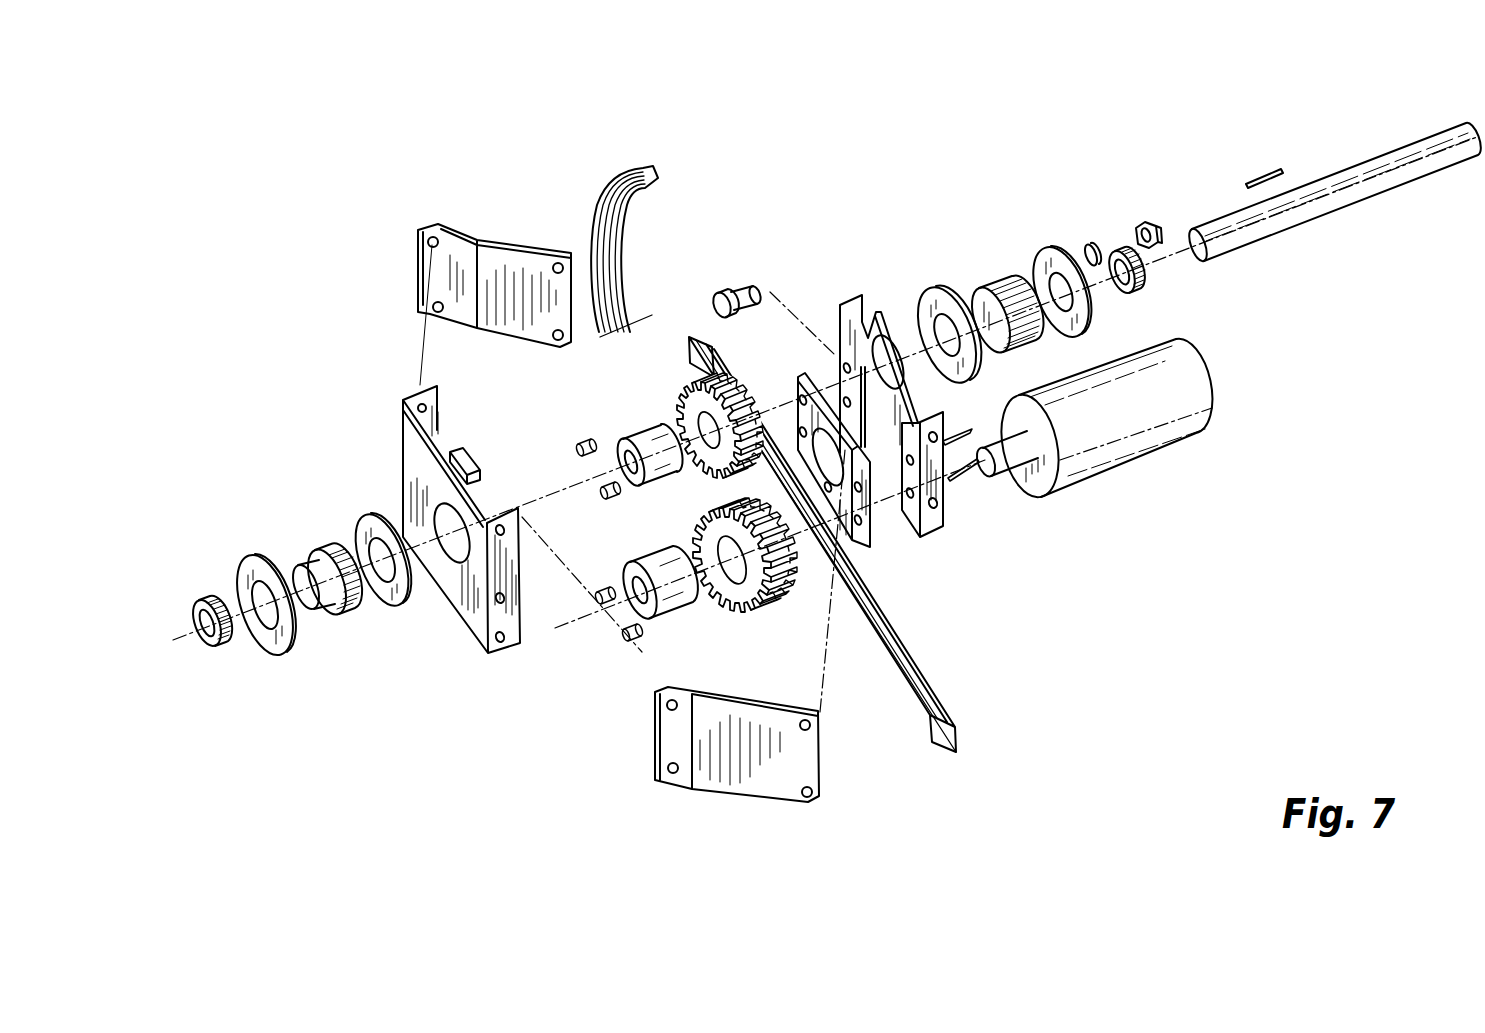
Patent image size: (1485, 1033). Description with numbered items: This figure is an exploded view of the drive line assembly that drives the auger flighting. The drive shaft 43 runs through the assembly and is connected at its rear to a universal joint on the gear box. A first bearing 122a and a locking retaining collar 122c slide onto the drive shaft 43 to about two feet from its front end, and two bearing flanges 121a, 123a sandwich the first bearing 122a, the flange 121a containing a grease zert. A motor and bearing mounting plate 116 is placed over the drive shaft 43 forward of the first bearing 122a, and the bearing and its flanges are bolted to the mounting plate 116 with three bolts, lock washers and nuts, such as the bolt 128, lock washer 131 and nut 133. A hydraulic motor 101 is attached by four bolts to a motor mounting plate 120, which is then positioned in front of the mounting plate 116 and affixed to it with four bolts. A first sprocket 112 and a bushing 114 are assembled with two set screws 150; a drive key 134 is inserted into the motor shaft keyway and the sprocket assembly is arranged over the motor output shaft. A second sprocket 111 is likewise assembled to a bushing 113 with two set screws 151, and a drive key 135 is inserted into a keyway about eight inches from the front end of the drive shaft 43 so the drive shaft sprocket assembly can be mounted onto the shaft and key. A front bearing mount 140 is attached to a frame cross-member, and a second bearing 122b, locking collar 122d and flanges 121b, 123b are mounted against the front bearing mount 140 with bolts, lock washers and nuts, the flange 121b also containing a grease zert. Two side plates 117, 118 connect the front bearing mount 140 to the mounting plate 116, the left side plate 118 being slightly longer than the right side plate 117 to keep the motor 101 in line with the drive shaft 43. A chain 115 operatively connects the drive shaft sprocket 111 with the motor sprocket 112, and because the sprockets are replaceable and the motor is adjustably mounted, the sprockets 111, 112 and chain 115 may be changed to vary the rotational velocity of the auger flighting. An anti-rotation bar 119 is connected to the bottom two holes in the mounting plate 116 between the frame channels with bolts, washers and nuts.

The drive shaft 43 is at (1290, 222).
The hydraulic motor 101 is at (1152, 450).
The second sprocket 111 is at (705, 405).
The first sprocket 112 is at (740, 622).
The bushing 113 is at (620, 450).
The bushing 114 is at (662, 600).
The chain 115 is at (636, 170).
The motor and bearing mounting plate 116 is at (937, 522).
The right side plate 117 is at (493, 262).
The left side plate 118 is at (735, 795).
The anti-rotation bar 119 is at (958, 732).
The motor mounting plate 120 is at (868, 540).
The bearing flange 121a is at (927, 322).
The bearing flange 121b is at (252, 570).
The first bearing 122a is at (988, 292).
The second bearing 122b is at (333, 616).
The locking retaining collar 122c is at (1140, 290).
The locking collar 122d is at (197, 602).
The bearing flange 123a is at (1050, 277).
The bearing flange 123b is at (360, 532).
The bolt 128 is at (745, 288).
The lock washer 131 is at (1095, 243).
The nut 133 is at (1148, 222).
The drive key 134 is at (963, 470).
The drive key 135 is at (1262, 182).
The front bearing mount 140 is at (470, 600).
The set screws 150 is at (622, 633).
The set screws 151 is at (598, 487).